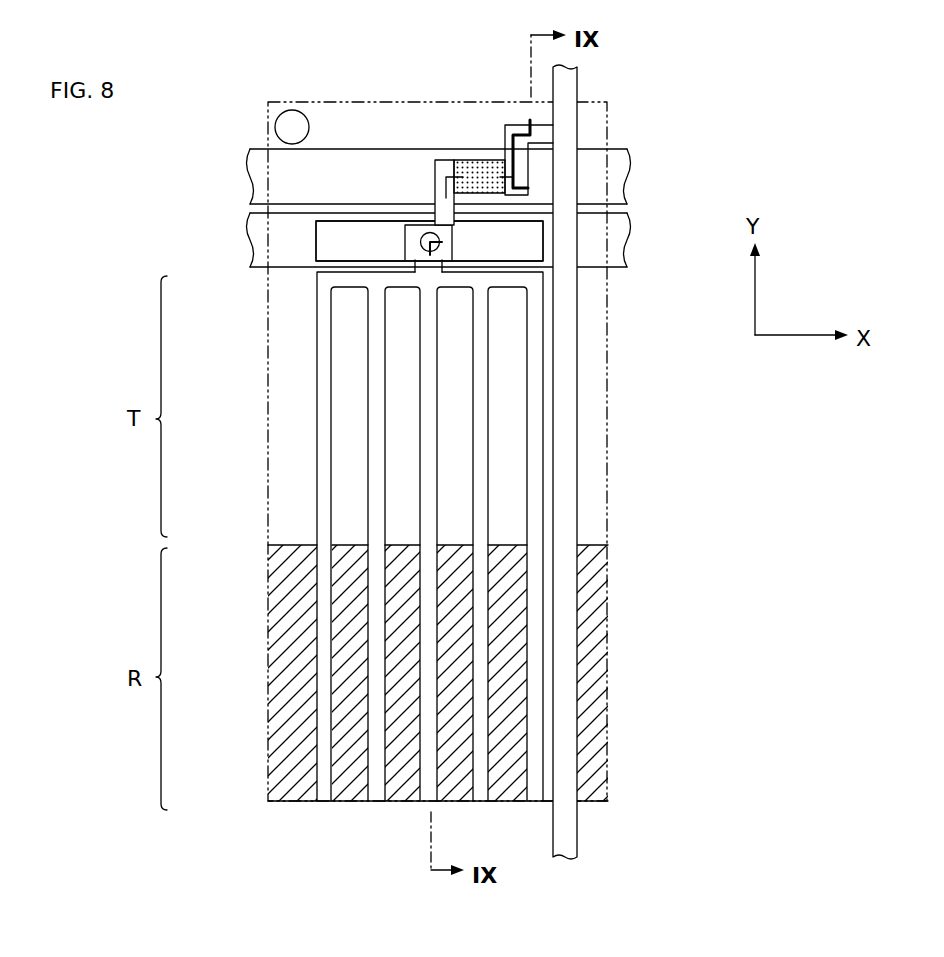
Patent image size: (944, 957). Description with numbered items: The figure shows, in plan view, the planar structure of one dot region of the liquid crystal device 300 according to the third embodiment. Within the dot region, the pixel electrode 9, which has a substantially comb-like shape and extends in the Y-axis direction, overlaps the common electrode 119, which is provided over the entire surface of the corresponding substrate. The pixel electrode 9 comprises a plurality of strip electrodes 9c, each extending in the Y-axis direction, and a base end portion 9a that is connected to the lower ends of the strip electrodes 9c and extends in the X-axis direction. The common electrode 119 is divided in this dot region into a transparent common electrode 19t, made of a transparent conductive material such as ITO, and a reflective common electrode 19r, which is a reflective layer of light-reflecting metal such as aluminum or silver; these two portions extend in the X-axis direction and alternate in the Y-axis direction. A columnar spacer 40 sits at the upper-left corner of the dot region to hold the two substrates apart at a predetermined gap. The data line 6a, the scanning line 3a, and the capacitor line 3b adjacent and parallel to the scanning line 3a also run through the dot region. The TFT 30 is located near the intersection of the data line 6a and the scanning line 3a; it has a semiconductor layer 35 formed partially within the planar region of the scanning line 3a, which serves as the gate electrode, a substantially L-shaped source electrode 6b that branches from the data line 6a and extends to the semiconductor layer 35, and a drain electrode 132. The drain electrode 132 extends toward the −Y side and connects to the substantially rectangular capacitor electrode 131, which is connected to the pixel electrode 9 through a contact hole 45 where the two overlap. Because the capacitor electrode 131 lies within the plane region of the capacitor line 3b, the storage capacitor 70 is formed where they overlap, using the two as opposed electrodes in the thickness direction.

The liquid crystal device 300 is at (672, 90).
The TFT 30 is at (452, 124).
The data line 6a is at (578, 843).
The source electrode 6b is at (512, 128).
The semiconductor layer 35 is at (487, 165).
The drain electrode 132 is at (445, 160).
The capacitor electrode 131 is at (315, 238).
The storage capacitor 70 is at (306, 255).
The columnar spacer 40 is at (292, 120).
The scanning line 3a is at (259, 153).
The capacitor line 3b is at (259, 264).
The contact hole 45 is at (421, 243).
The pixel electrode 9 is at (378, 545).
The base end portion 9a is at (365, 280).
The strip electrodes 9c is at (328, 803).
The transparent common electrode 19t is at (645, 97).
The reflective common electrode 19r is at (645, 792).
The common electrode 119 is at (521, 449).